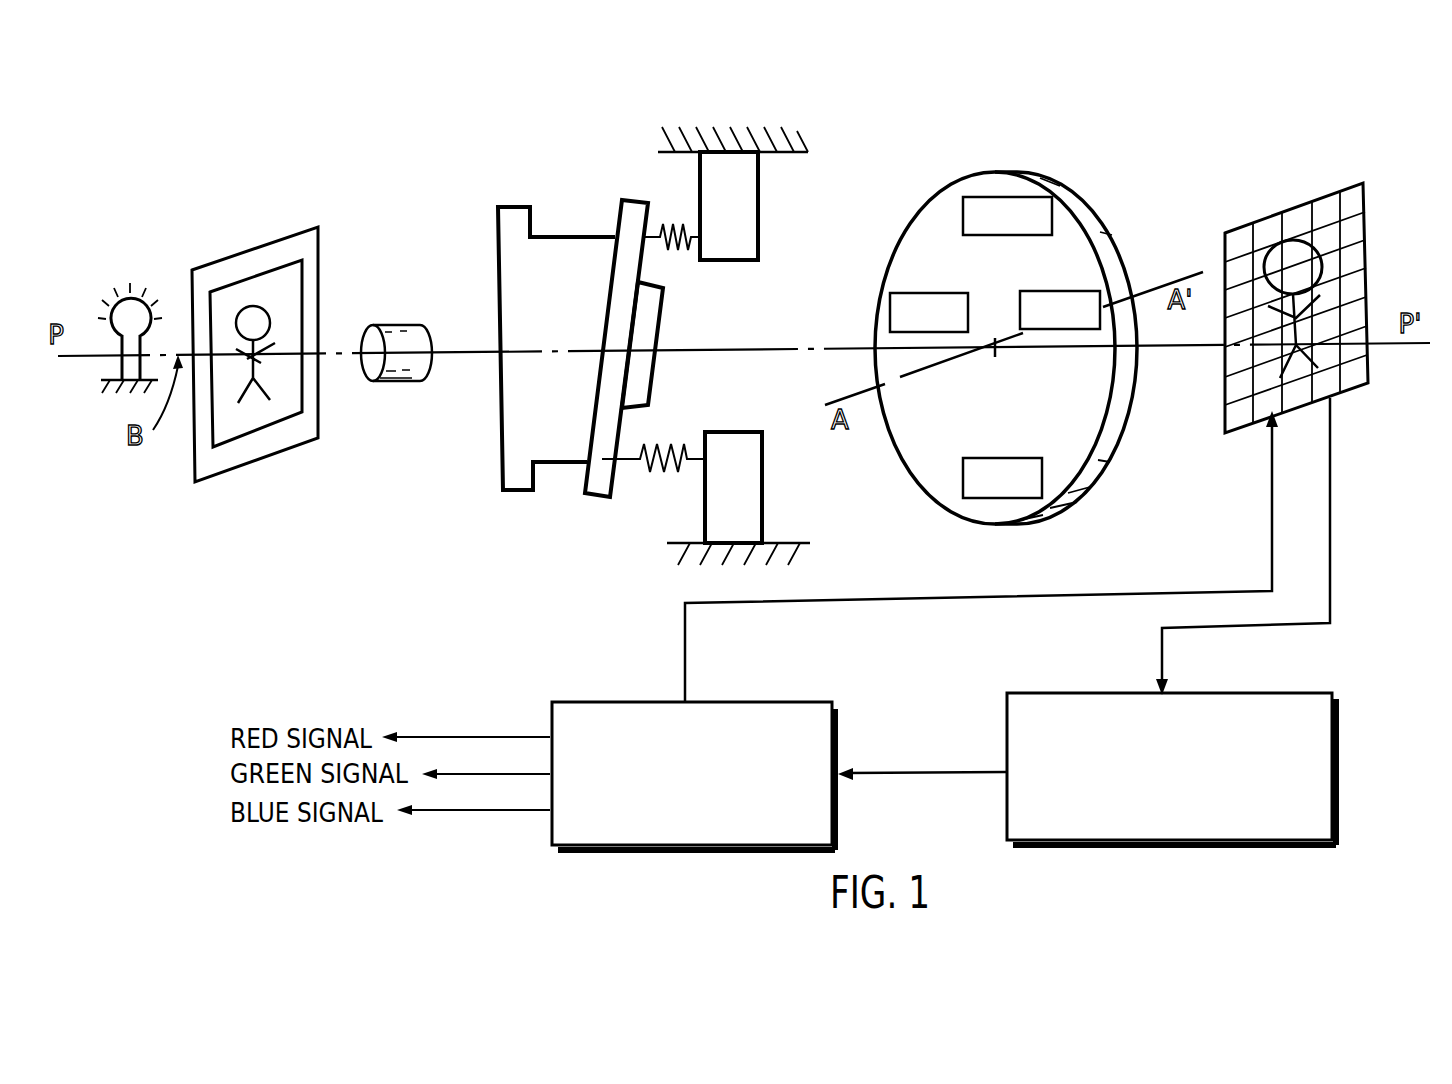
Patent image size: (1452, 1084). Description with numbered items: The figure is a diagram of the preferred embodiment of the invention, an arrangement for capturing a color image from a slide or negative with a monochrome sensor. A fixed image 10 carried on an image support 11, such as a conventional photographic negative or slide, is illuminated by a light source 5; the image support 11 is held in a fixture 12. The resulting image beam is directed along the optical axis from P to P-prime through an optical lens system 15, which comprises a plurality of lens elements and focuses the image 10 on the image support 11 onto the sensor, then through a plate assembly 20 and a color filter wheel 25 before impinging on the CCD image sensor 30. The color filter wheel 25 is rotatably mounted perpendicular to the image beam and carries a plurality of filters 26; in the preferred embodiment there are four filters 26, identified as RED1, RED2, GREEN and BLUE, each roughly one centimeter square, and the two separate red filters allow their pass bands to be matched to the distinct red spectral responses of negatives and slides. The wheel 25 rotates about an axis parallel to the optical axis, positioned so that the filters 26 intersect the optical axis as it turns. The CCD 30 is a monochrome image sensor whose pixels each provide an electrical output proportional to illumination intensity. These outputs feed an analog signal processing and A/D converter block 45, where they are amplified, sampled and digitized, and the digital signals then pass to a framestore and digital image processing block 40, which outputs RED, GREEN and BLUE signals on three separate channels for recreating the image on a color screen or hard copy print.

The light source 5 is at (130, 296).
The fixed image 10 is at (268, 318).
The image support 11 is at (282, 262).
The fixture 12 is at (245, 252).
The optical lens system 15 is at (400, 323).
The plate assembly 20 is at (569, 205).
The color filter wheel 25 is at (1087, 200).
The filters 26 is at (918, 293).
The CCD image sensor 30 is at (1272, 215).
The framestore and digital image processing block 40 is at (619, 702).
The analog signal processing and A/D converter block 45 is at (1249, 693).